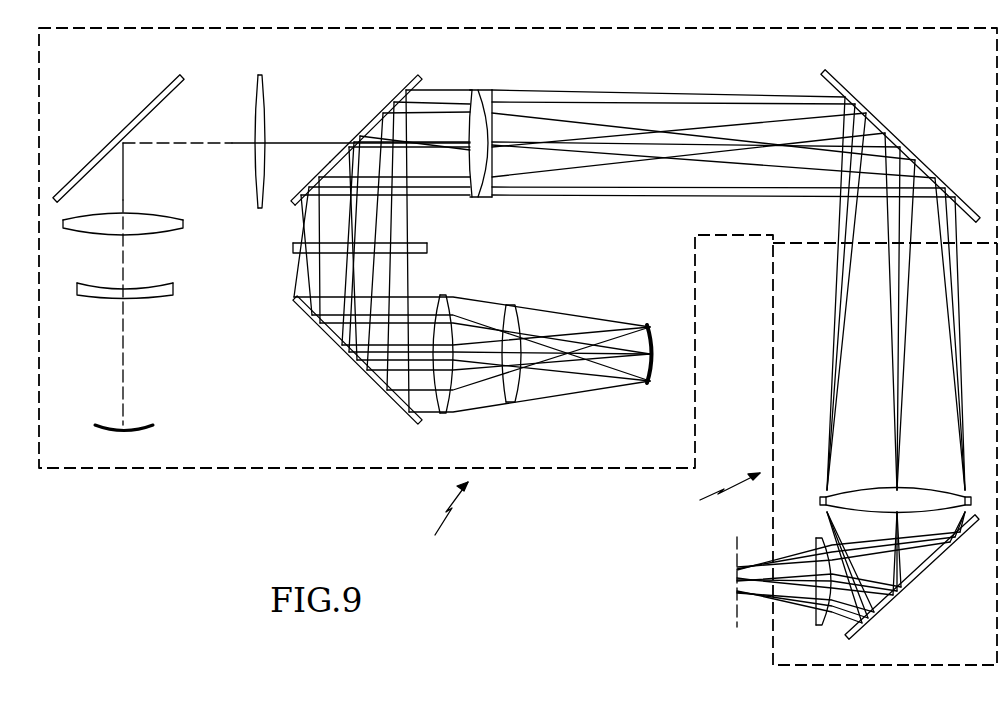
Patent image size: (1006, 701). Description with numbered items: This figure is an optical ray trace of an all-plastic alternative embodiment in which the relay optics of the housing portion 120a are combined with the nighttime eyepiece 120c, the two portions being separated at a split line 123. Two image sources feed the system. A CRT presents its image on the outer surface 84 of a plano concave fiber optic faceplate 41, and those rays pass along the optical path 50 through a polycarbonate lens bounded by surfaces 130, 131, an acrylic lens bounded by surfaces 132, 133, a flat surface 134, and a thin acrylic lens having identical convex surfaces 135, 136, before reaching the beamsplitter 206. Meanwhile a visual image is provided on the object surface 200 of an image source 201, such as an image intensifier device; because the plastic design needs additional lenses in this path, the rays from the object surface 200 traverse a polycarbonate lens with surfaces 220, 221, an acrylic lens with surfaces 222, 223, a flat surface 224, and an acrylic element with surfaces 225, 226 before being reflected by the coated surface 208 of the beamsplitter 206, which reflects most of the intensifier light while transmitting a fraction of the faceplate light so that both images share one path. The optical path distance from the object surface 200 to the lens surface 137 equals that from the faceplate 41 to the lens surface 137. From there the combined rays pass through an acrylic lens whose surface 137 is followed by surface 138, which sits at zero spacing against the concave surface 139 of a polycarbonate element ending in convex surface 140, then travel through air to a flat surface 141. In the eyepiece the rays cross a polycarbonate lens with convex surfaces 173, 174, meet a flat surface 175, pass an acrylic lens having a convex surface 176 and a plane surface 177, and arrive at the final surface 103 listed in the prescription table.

The plano concave fiber optic faceplate 41 is at (130, 425).
The optical path 50 is at (173, 142).
The outer surface of the faceplate 84 is at (110, 428).
The final surface 103 is at (738, 547).
The housing portion 120a is at (440, 520).
The nighttime eyepiece 120c is at (707, 494).
The split line 123 is at (823, 243).
The lens surface 130 is at (129, 295).
The lens surface 131 is at (100, 283).
The lens surface 132 is at (134, 227).
The lens surface 133 is at (153, 215).
The plane surface 134 is at (173, 92).
The lens surface 135 is at (278, 88).
The lens surface 136 is at (256, 139).
The lens surface 137 is at (473, 130).
The lens surface 138 is at (480, 168).
The lens surface 139 is at (495, 160).
The lens surface 140 is at (482, 143).
The plane surface 141 is at (825, 87).
The lens surface 173 is at (895, 498).
The lens surface 174 is at (845, 508).
The plane surface 175 is at (916, 540).
The lens surface 176 is at (804, 584).
The lens surface 177 is at (815, 547).
The object surface 200 is at (660, 339).
The image source 201 is at (652, 352).
The beamsplitter 206 is at (297, 202).
The beamsplitter surface 208 is at (365, 129).
The lens surface 220 is at (527, 358).
The lens surface 221 is at (502, 392).
The lens surface 222 is at (468, 369).
The lens surface 223 is at (440, 407).
The plane surface 224 is at (333, 313).
The lens surface 225 is at (377, 244).
The lens surface 226 is at (402, 242).